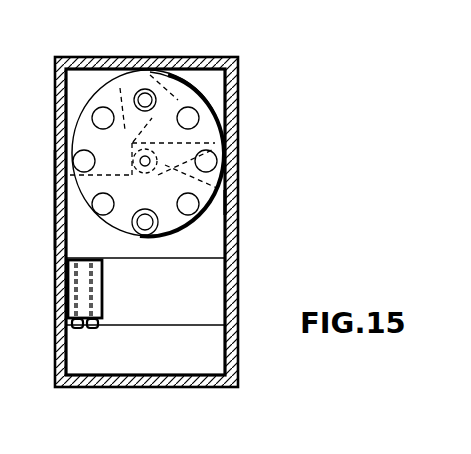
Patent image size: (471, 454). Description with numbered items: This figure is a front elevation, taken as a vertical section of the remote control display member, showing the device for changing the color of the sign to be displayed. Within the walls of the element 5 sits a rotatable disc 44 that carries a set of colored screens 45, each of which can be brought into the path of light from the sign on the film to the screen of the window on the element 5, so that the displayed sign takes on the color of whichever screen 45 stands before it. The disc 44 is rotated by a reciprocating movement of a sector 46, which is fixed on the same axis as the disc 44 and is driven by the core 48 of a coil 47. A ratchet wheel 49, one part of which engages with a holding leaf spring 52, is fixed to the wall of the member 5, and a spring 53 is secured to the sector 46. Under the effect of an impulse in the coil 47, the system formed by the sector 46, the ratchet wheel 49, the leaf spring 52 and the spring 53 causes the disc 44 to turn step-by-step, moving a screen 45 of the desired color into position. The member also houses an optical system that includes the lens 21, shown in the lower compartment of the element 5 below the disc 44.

The element 5 is at (239, 301).
The lens 21 is at (116, 226).
The rotatable disc 44 is at (80, 136).
The colored screens 45 is at (76, 166).
The sector 46 is at (218, 105).
The coil 47 is at (156, 74).
The core 48 is at (139, 92).
The ratchet wheel 49 is at (220, 203).
The holding leaf spring 52 is at (56, 198).
The spring 53 is at (222, 180).